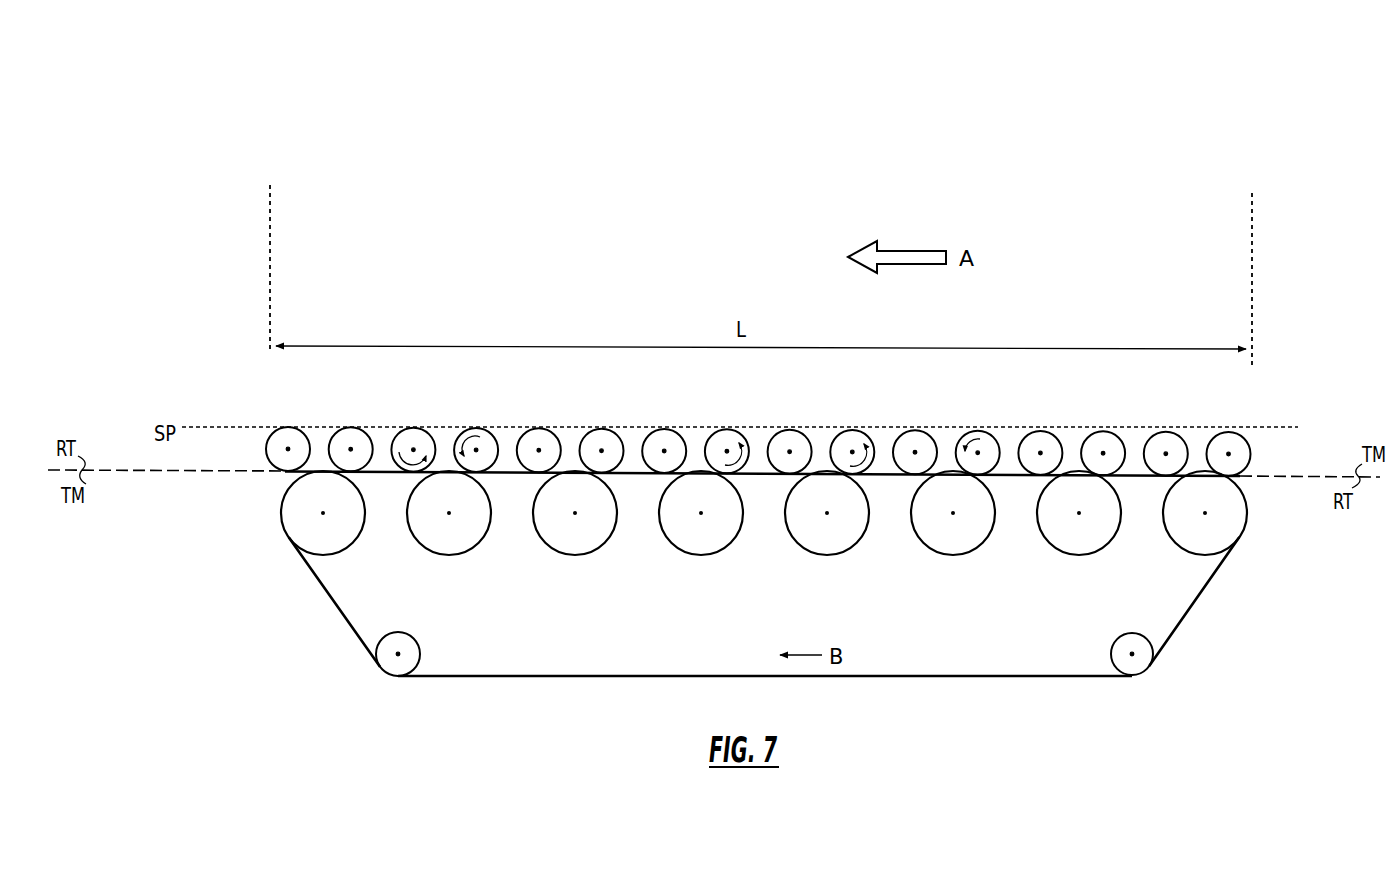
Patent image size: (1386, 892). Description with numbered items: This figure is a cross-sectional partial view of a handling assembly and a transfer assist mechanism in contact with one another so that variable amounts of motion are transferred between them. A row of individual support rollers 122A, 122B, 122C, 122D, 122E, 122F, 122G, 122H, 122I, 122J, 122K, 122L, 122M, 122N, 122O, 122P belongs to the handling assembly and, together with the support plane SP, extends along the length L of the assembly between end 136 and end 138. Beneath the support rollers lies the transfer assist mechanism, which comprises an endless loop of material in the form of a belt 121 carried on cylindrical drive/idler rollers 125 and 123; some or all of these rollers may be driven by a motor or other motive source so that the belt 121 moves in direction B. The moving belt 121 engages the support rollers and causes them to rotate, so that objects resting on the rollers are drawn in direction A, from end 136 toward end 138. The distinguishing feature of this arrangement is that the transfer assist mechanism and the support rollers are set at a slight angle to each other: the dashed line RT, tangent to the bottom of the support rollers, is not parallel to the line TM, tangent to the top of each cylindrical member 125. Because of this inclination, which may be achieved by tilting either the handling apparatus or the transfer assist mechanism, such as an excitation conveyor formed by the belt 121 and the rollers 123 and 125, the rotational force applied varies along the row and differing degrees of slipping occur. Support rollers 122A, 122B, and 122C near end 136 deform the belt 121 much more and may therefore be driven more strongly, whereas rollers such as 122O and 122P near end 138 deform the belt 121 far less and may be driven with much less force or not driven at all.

The belt 121 is at (346, 620).
The drive/idler roller 123 is at (413, 653).
The drive/idler roller 125 is at (700, 558).
The end 136 is at (1254, 297).
The end 138 is at (268, 290).
The support roller 122A is at (1224, 440).
The support roller 122B is at (1160, 440).
The support roller 122C is at (1098, 440).
The support roller 122D is at (1035, 440).
The support roller 122E is at (973, 440).
The support roller 122F is at (910, 440).
The support roller 122G is at (847, 440).
The support roller 122H is at (784, 440).
The support roller 122I is at (722, 440).
The support roller 122J is at (659, 440).
The support roller 122K is at (596, 440).
The support roller 122L is at (534, 440).
The support roller 122M is at (471, 440).
The support roller 122N is at (408, 440).
The support roller 122O is at (345, 440).
The support roller 122P is at (282, 440).